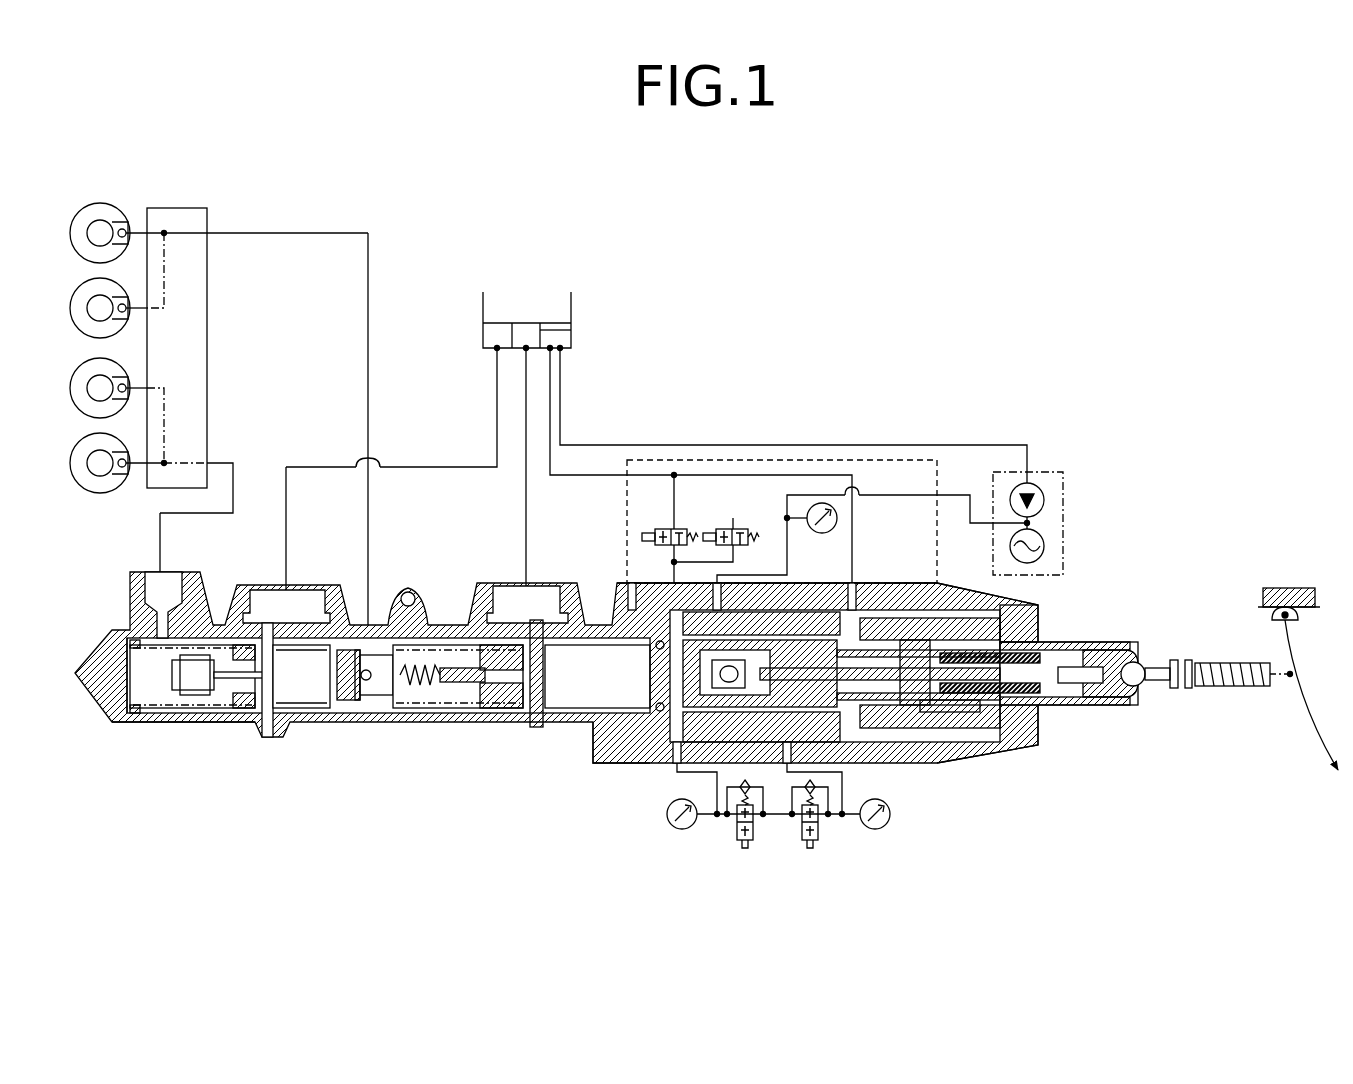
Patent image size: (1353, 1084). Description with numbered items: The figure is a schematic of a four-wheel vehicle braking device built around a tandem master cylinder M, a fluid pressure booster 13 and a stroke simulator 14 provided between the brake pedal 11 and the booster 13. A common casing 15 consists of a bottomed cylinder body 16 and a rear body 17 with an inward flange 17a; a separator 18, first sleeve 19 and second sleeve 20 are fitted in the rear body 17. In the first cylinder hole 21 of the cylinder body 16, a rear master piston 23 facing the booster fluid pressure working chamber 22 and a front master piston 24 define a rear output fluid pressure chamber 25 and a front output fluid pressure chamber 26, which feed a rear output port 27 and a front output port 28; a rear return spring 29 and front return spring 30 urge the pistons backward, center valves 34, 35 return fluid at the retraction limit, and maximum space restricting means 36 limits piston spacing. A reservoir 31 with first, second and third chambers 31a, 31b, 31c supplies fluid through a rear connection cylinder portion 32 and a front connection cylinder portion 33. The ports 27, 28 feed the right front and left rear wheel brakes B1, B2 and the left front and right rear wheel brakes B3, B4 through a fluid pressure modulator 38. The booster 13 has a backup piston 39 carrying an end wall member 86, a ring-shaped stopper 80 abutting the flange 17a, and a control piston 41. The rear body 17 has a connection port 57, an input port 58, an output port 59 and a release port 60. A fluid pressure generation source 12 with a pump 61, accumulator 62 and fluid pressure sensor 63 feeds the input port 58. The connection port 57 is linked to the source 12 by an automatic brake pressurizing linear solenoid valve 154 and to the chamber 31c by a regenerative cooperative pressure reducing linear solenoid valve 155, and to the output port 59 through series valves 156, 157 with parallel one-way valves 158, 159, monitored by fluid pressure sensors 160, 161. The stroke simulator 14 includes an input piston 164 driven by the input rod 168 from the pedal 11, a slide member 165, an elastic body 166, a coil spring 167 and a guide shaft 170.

The brake pedal 11 is at (1340, 770).
The fluid pressure generation source 12 is at (1043, 470).
The fluid pressure booster 13 is at (904, 735).
The stroke simulator 14 is at (1070, 637).
The casing 15 is at (608, 768).
The cylinder body 16 is at (457, 703).
The rear body 17 is at (914, 598).
The inward flange 17a is at (1042, 717).
The separator 18 is at (675, 752).
The first sleeve 19 is at (778, 605).
The second sleeve 20 is at (830, 607).
The first cylinder hole 21 is at (293, 708).
The booster fluid pressure working chamber 22 is at (605, 733).
The rear master piston 23 is at (525, 722).
The front master piston 24 is at (258, 724).
The rear output fluid pressure chamber 25 is at (420, 693).
The front output fluid pressure chamber 26 is at (152, 692).
The rear output port 27 is at (367, 620).
The front output port 28 is at (162, 585).
The rear return spring 29 is at (417, 600).
The front return spring 30 is at (140, 725).
The reservoir 31 is at (572, 332).
The first reservoir chamber 31a is at (498, 320).
The second reservoir chamber 31b is at (522, 330).
The third reservoir chamber 31c is at (553, 330).
The rear connection cylinder portion 32 is at (577, 582).
The front connection cylinder portion 33 is at (237, 588).
The center valve 34 is at (384, 706).
The center valve 35 is at (183, 710).
The maximum space restricting means 36 is at (432, 662).
The fluid pressure modulator 38 is at (195, 362).
The backup piston 39 is at (942, 643).
The control piston 41 is at (1048, 638).
The connection port 57 is at (640, 582).
The input port 58 is at (705, 580).
The output port 59 is at (792, 752).
The release port 60 is at (860, 602).
The pump 61 is at (1045, 500).
The accumulator 62 is at (1045, 546).
The fluid pressure sensor 63 is at (808, 510).
The stopper 80 is at (977, 718).
The end wall member 86 is at (660, 668).
The automatic brake pressurizing linear solenoid valve 154 is at (707, 528).
The regenerative cooperative pressure reducing linear solenoid valve 155 is at (653, 528).
The automatic brake pressure reducing linear solenoid valve 156 is at (820, 828).
The regenerative cooperative pressurizing linear solenoid valve 157 is at (752, 842).
The first one-way valve 158 is at (795, 792).
The second one-way valve 159 is at (725, 792).
The brake operation amount detecting fluid pressure sensor 160 is at (890, 828).
The automatic brake feedback control fluid pressure sensor 161 is at (670, 827).
The input piston 164 is at (1112, 640).
The slide member 165 is at (968, 658).
The elastic body 166 is at (1004, 697).
The coil spring 167 is at (952, 718).
The input rod 168 is at (1181, 682).
The guide shaft 170 is at (1062, 678).
The master cylinder M is at (366, 734).
The right front wheel brake B1 is at (103, 215).
The left rear wheel brake B2 is at (97, 288).
The left front wheel brake B3 is at (97, 368).
The right rear wheel brake B4 is at (97, 443).